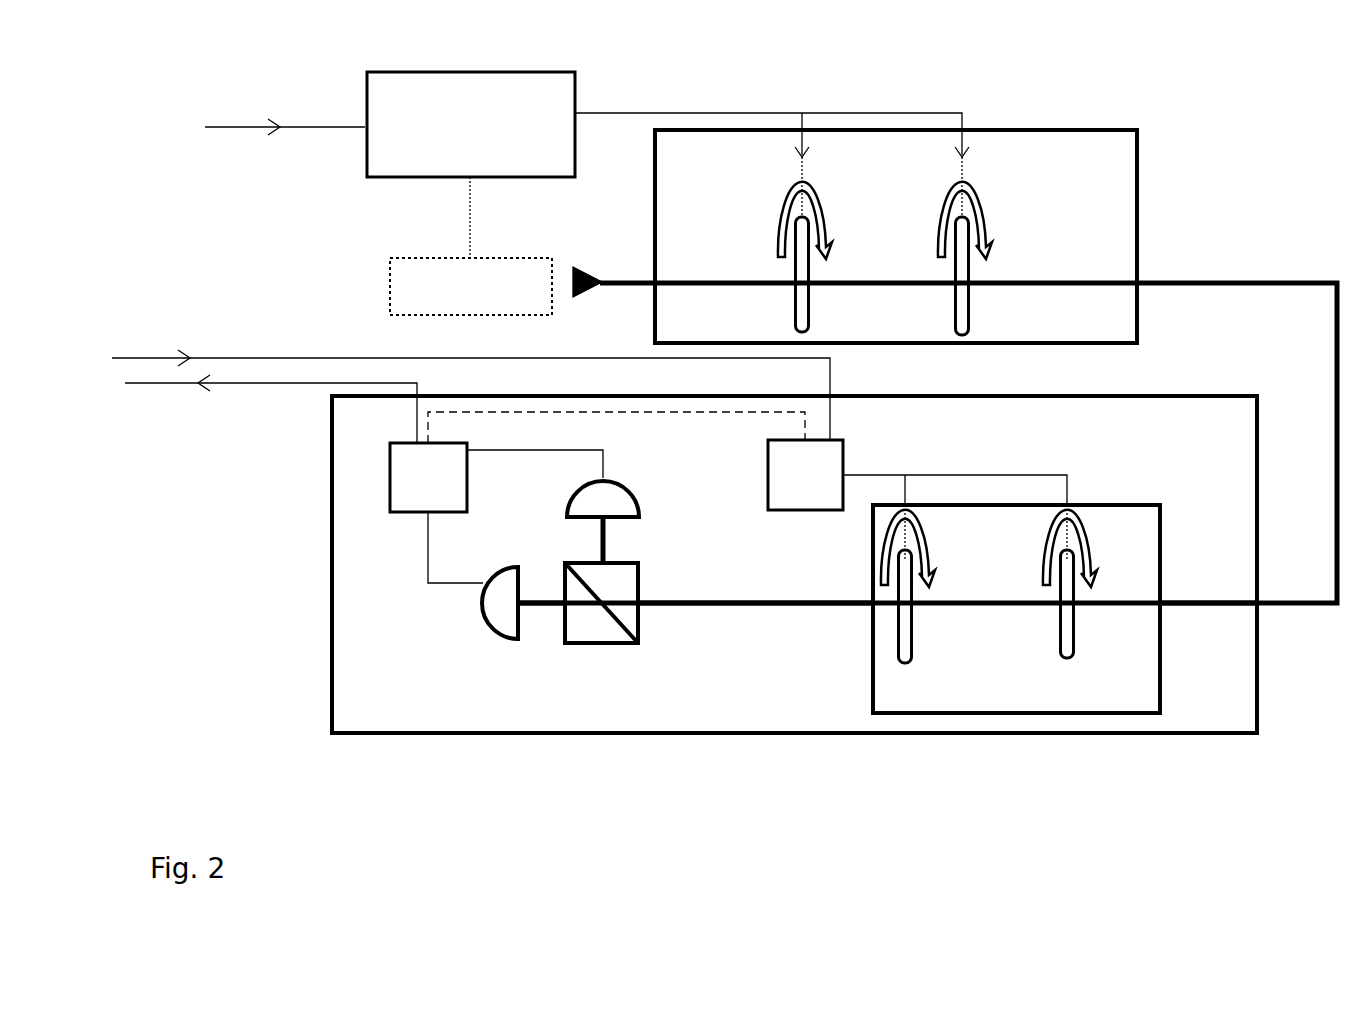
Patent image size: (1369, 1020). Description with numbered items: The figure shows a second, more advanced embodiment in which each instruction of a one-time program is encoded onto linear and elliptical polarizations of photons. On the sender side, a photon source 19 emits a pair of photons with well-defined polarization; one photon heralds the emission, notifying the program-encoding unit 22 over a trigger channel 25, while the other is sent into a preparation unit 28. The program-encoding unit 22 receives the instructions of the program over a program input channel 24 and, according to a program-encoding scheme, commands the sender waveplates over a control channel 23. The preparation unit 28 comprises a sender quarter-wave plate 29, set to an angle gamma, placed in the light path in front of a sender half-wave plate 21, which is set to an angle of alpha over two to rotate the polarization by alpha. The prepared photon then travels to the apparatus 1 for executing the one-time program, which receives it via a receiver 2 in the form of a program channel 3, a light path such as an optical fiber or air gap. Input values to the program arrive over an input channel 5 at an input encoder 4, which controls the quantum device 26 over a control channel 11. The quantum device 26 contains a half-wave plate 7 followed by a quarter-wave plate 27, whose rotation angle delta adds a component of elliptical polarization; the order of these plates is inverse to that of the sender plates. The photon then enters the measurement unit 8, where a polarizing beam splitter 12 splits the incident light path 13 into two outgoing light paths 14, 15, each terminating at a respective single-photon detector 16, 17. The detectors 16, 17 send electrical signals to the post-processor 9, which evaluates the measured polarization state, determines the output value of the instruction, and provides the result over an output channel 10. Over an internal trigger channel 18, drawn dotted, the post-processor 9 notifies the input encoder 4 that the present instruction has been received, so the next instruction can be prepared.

The apparatus 1 is at (1200, 738).
The receiver 2 is at (1270, 622).
The program channel 3 is at (1177, 600).
The input encoder 4 is at (805, 475).
The input channel 5 is at (322, 357).
The half-wave plate 7 is at (1077, 648).
The measurement unit 8 is at (656, 673).
The post-processor 9 is at (496, 513).
The output channel 10 is at (157, 383).
The control channel 11 is at (1020, 475).
The polarizing beam splitter 12 is at (578, 645).
The incident light path 13 is at (738, 601).
The outgoing light path 14 is at (605, 545).
The outgoing light path 15 is at (553, 608).
The detector 16 is at (633, 495).
The detector 17 is at (490, 632).
The internal trigger channel 18 is at (685, 413).
The photon source 19 is at (390, 290).
The sender half-wave plate 21 is at (968, 270).
The program-encoding unit 22 is at (471, 124).
The control channel 23 is at (878, 112).
The program input channel 24 is at (330, 125).
The trigger channel 25 is at (472, 243).
The quantum device 26 is at (1017, 713).
The quarter-wave plate 27 is at (912, 665).
The preparation unit 28 is at (1140, 142).
The sender quarter-wave plate 29 is at (798, 268).